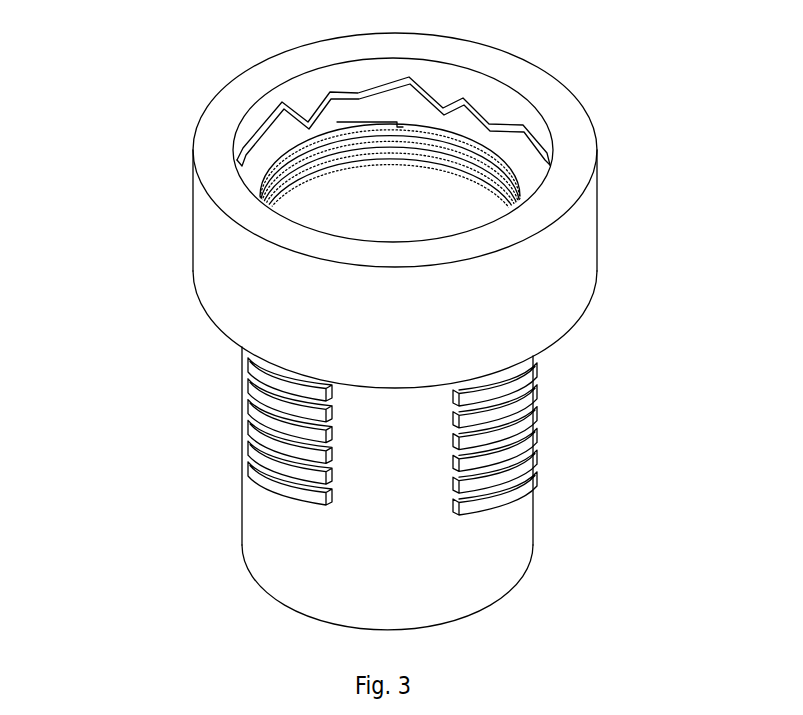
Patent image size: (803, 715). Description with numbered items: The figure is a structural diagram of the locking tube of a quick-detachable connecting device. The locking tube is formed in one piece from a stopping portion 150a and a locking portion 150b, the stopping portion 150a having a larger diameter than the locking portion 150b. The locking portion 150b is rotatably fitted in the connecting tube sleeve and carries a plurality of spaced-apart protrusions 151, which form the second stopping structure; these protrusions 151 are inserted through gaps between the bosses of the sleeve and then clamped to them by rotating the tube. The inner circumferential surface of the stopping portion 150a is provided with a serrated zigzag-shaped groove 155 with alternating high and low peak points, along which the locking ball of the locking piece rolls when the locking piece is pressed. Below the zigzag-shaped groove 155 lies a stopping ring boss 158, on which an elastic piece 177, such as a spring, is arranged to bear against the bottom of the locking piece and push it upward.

The stopping portion 150a is at (210, 265).
The locking portion 150b is at (257, 533).
The protrusion 151 is at (537, 397).
The zigzag-shaped groove 155 is at (513, 124).
The elastic piece 177 is at (527, 177).
The stopping ring boss 158 is at (353, 167).